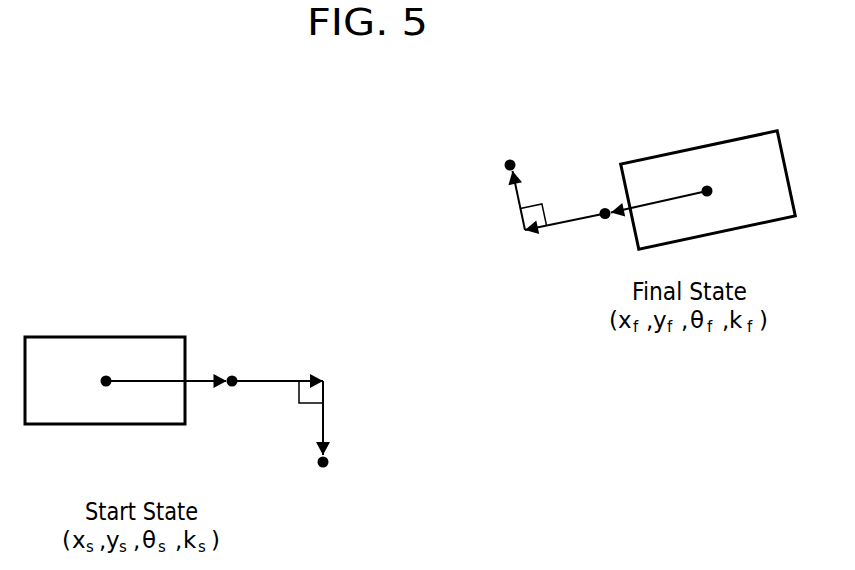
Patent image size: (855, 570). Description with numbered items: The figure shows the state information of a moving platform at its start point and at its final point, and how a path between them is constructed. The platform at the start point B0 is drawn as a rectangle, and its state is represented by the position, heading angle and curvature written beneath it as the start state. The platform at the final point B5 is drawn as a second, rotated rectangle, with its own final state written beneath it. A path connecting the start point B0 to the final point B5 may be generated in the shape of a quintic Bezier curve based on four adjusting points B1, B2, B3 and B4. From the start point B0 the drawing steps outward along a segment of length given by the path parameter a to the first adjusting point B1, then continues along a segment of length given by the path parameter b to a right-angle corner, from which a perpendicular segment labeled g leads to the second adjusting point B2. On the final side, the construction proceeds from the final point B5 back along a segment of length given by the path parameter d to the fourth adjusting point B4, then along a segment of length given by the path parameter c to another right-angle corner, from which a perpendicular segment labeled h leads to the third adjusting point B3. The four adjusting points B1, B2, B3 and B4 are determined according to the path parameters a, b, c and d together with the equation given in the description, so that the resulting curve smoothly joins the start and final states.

The start point B0 is at (92, 384).
The first adjusting point B1 is at (232, 364).
The second adjusting point B2 is at (327, 479).
The third adjusting point B3 is at (511, 149).
The fourth adjusting point B4 is at (598, 195).
The final point B5 is at (725, 187).
The path parameter a is at (166, 391).
The path parameter b is at (277, 391).
The segment g from corner to B2 g is at (330, 418).
The path parameter c is at (562, 226).
The path parameter d is at (659, 210).
The segment h from corner to B3 h is at (511, 200).